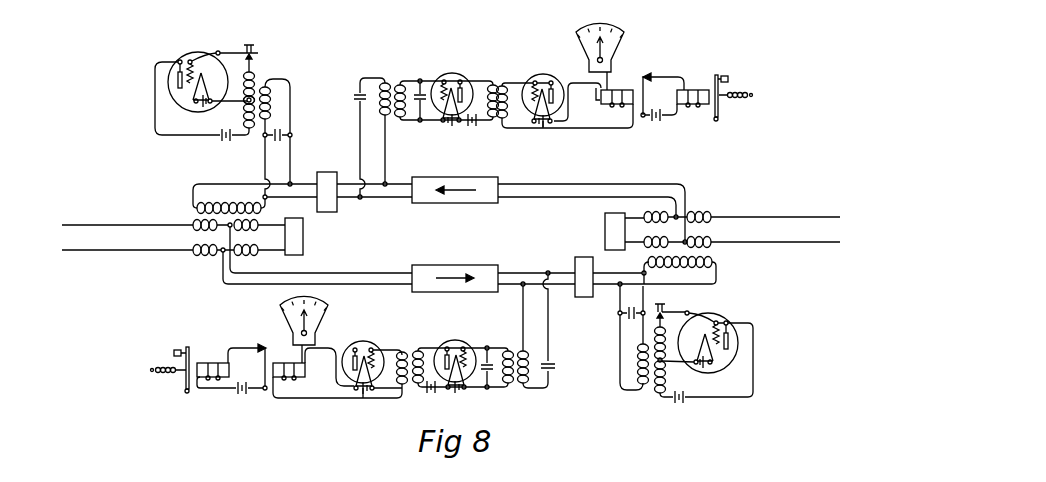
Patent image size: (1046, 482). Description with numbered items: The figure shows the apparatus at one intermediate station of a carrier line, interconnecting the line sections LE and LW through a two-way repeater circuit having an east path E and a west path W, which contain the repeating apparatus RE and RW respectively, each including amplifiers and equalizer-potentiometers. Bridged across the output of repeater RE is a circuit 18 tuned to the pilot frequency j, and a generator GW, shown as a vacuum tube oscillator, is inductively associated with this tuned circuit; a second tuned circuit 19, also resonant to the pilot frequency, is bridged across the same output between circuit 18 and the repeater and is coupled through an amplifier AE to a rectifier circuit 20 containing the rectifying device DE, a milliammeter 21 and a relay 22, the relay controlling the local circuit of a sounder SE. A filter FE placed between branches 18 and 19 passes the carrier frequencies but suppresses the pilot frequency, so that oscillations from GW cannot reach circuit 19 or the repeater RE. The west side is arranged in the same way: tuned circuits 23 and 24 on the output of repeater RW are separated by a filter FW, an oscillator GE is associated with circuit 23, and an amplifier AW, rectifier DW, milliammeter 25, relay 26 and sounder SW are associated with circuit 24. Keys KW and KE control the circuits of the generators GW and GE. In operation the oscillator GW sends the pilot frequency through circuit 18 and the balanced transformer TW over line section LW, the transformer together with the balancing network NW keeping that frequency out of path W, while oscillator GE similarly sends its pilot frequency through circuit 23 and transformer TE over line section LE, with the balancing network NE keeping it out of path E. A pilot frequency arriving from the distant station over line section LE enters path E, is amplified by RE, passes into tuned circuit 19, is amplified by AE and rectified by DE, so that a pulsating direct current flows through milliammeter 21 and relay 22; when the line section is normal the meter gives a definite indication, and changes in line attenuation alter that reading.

The key KW is at (229, 51).
The generator GW is at (162, 115).
The pilot frequency j is at (431, 226).
The tuned circuit 18 is at (288, 131).
The tuned circuit 19 is at (382, 84).
The filter FE is at (320, 172).
The amplifier AE is at (445, 80).
The rectifying device DE is at (536, 81).
The milliammeter 21 is at (620, 32).
The relay 22 is at (620, 88).
The sounder SE is at (692, 88).
The rectifier circuit 20 is at (612, 122).
The line section LW is at (127, 230).
The transformer TW is at (224, 219).
The balancing network NW is at (296, 245).
The path W is at (368, 277).
The repeating apparatus RE is at (455, 171).
The path E is at (516, 184).
The repeating apparatus RW is at (472, 256).
The balancing network NE is at (612, 230).
The transformer TE is at (697, 228).
The line section LE is at (785, 228).
The filter FW is at (589, 262).
The tuned circuit 23 is at (616, 288).
The tuned circuit 24 is at (544, 349).
The milliammeter 25 is at (293, 322).
The relay 26 is at (290, 378).
The sounder SW is at (205, 362).
The rectifier DW is at (365, 349).
The amplifier AW is at (455, 341).
The key KE is at (668, 316).
The oscillator GE is at (744, 316).